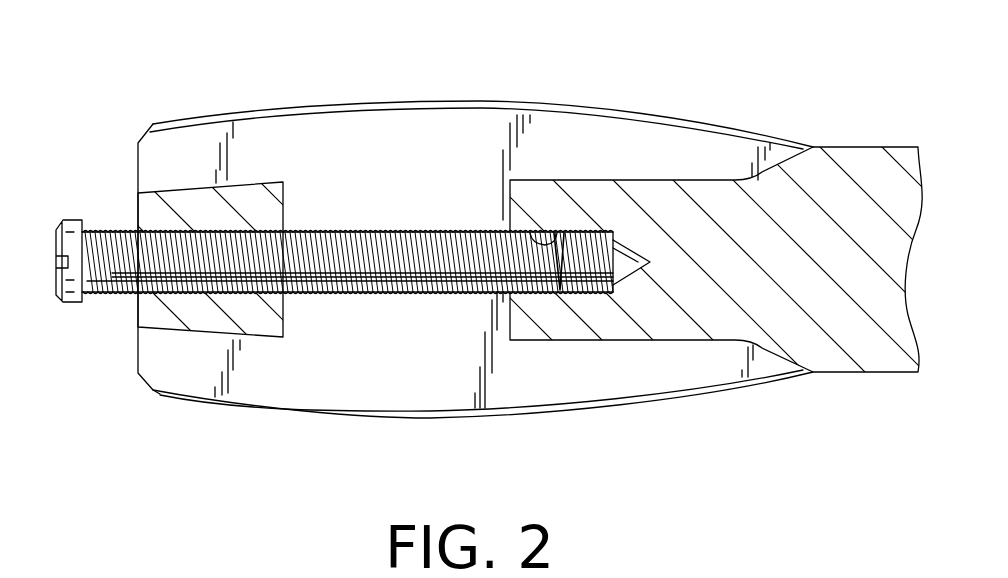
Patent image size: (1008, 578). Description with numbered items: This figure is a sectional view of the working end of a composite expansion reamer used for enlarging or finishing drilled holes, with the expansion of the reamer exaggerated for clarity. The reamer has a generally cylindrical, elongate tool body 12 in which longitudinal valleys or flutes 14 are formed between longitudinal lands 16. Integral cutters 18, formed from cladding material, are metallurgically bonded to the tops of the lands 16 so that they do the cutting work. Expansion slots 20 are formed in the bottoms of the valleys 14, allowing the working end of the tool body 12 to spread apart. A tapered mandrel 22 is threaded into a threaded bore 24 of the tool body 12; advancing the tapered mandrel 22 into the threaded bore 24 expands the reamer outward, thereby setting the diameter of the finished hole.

The tool body 12 is at (863, 148).
The flutes 14 is at (183, 183).
The lands 16 is at (265, 128).
The cutters 18 is at (500, 106).
The expansion slots 20 is at (397, 193).
The tapered mandrel 22 is at (70, 303).
The threaded bore 24 is at (545, 236).